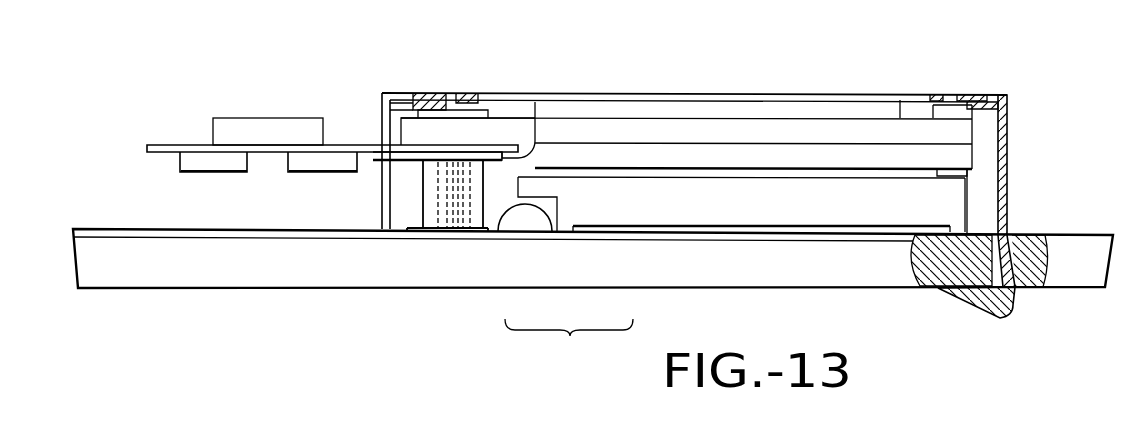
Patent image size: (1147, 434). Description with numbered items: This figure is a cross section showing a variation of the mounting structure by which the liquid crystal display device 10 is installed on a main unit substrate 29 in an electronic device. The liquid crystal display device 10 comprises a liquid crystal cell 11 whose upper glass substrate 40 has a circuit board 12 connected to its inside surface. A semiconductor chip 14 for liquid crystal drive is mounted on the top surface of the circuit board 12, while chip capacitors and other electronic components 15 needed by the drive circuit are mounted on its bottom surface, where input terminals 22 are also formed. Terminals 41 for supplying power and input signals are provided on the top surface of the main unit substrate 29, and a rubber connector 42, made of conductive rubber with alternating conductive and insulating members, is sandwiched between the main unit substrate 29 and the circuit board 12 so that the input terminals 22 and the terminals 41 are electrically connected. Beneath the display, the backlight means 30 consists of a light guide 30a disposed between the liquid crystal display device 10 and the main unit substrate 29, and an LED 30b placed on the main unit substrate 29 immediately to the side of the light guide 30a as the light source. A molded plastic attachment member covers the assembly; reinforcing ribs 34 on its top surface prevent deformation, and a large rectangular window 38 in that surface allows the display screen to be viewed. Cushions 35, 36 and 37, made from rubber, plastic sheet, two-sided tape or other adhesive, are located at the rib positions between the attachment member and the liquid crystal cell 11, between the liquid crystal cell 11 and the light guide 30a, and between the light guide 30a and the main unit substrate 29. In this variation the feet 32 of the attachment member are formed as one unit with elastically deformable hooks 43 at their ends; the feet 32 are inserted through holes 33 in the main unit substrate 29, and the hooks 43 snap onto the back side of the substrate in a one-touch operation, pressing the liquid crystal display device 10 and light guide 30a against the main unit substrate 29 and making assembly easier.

The liquid crystal display device 10 is at (727, 114).
The liquid crystal cell 11 is at (627, 116).
The circuit board 12 is at (353, 141).
The semiconductor chip 14 is at (253, 118).
The electronic components 15 is at (192, 170).
The input terminals 22 is at (533, 140).
The main unit substrate 29 is at (235, 290).
The backlight means 30 is at (569, 341).
The light guide 30a is at (608, 213).
The LED 30b is at (528, 230).
The feet 32 is at (1013, 267).
The holes 33 is at (1013, 243).
The reinforcing ribs 34 is at (470, 100).
The cushion 35 is at (415, 111).
The cushion 36 is at (972, 173).
The cushion 37 is at (947, 233).
The window 38 is at (920, 97).
The upper glass substrate 40 is at (507, 123).
The terminals 41 is at (477, 233).
The rubber connector 42 is at (423, 200).
The hooks 43 is at (983, 317).